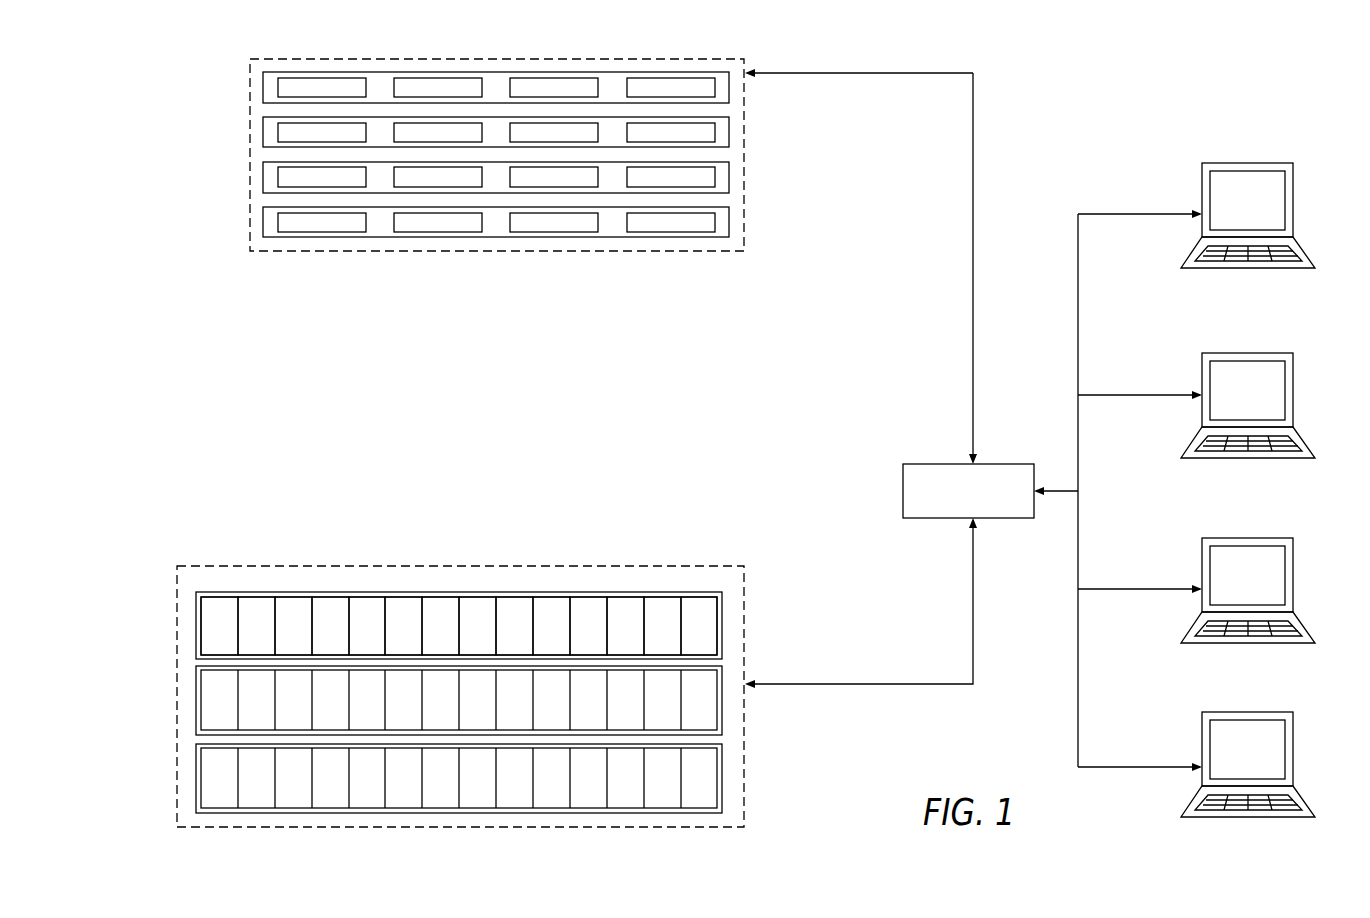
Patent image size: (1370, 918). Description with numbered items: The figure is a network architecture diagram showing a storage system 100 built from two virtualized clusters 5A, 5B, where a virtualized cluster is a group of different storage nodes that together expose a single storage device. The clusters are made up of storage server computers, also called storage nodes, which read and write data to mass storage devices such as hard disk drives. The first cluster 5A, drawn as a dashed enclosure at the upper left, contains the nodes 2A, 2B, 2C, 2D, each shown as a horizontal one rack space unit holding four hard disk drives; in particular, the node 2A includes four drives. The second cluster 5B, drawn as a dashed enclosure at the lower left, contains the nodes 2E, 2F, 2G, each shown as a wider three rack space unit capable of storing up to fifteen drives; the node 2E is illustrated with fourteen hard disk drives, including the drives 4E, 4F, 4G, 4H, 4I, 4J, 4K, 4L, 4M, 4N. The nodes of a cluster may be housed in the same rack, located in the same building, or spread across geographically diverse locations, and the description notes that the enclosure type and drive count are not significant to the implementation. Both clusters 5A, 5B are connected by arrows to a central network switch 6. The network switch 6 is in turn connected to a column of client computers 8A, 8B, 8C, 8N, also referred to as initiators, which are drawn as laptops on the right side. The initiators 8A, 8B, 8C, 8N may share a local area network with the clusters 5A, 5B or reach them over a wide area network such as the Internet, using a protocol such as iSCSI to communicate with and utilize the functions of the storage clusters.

The storage system 100 is at (1079, 78).
The virtualized cluster 5A is at (497, 146).
The virtualized cluster 5B is at (460, 687).
The storage server computer 2A is at (535, 93).
The storage server computer 2B is at (729, 132).
The storage server computer 2C is at (729, 177).
The storage server computer 2D is at (729, 222).
The storage server computer 2E is at (498, 625).
The storage server computer 2F is at (722, 713).
The storage server computer 2G is at (722, 778).
The hard disk drive 4E is at (357, 639).
The hard disk drive 4F is at (393, 639).
The hard disk drive 4G is at (430, 639).
The hard disk drive 4H is at (467, 639).
The hard disk drive 4I is at (506, 639).
The hard disk drive 4J is at (542, 639).
The hard disk drive 4K is at (578, 639).
The hard disk drive 4L is at (616, 639).
The hard disk drive 4M is at (651, 639).
The hard disk drive 4N is at (688, 639).
The network switch 6 is at (967, 481).
The client computer 8A is at (1248, 206).
The client computer 8B is at (1248, 396).
The client computer 8C is at (1248, 581).
The client computer 8N is at (1248, 755).